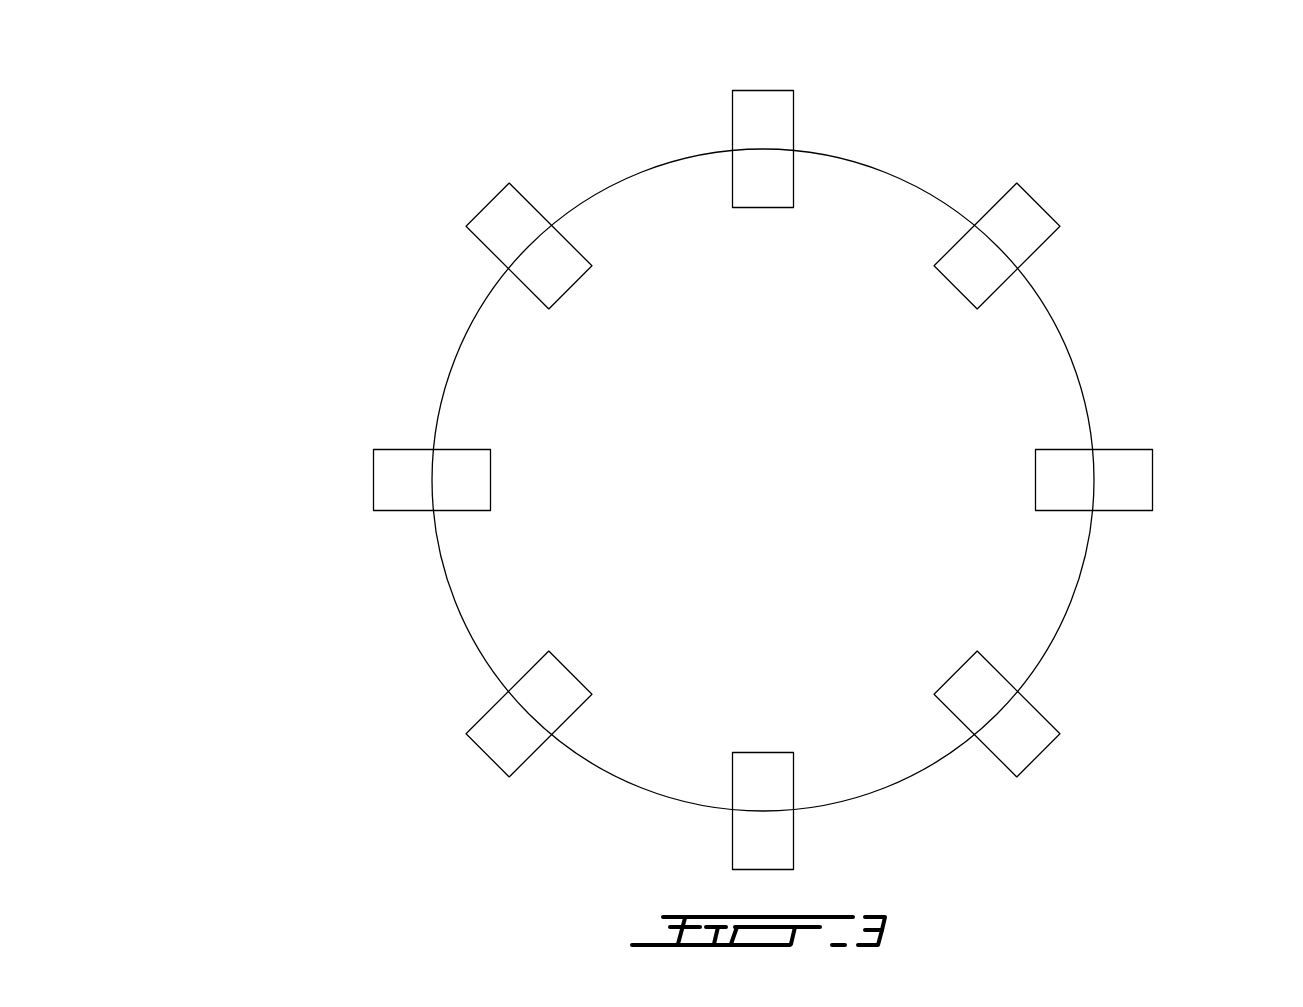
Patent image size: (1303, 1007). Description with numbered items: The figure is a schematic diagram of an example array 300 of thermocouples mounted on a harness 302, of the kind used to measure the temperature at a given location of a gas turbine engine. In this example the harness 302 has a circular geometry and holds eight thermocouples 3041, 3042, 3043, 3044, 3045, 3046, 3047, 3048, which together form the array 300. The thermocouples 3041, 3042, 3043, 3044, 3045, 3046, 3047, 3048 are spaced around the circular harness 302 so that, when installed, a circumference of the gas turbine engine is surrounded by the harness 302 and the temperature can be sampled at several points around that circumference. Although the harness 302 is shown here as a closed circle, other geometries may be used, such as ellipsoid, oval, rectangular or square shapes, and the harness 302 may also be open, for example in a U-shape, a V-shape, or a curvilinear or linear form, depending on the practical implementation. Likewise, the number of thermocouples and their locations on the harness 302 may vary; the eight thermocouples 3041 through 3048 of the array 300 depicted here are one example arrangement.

The array 300 is at (230, 250).
The harness 302 is at (462, 343).
The thermocouple 3041 is at (763, 91).
The thermocouple 3042 is at (1040, 200).
The thermocouple 3043 is at (1153, 483).
The thermocouple 3044 is at (1040, 758).
The thermocouple 3045 is at (732, 852).
The thermocouple 3046 is at (485, 757).
The thermocouple 3047 is at (372, 482).
The thermocouple 3048 is at (487, 203).